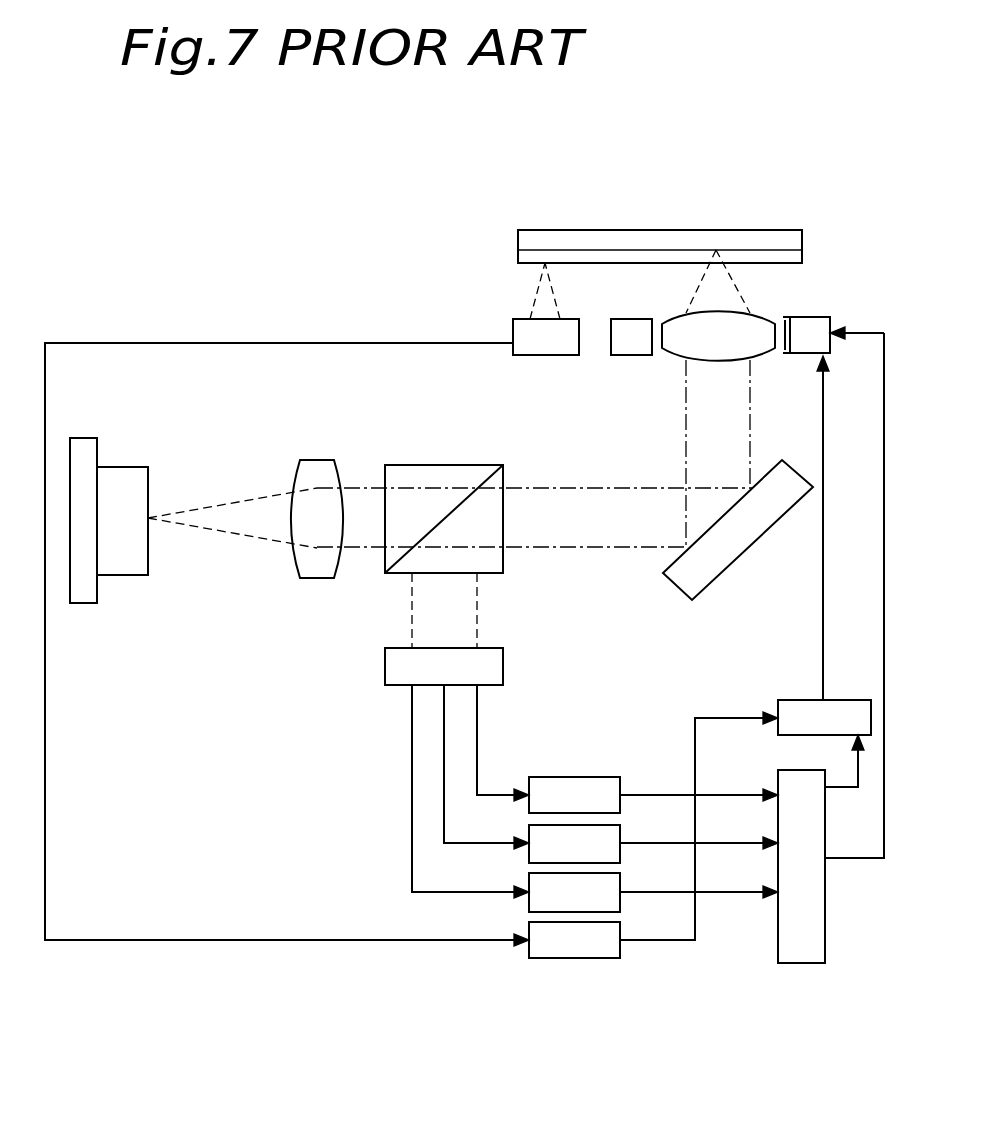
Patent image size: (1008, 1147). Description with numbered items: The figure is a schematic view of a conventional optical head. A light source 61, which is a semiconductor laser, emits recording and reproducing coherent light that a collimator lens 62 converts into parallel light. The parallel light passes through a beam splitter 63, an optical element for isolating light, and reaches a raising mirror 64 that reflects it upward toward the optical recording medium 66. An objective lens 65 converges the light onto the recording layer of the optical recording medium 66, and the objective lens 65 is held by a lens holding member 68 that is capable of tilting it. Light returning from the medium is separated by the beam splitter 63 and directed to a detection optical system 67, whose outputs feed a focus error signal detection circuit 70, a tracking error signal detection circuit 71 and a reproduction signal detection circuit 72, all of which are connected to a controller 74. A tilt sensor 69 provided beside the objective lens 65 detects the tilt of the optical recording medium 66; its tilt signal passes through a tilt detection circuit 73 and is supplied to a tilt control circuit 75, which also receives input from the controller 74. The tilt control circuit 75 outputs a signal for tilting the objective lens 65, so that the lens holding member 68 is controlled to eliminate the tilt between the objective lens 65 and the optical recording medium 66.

The light source 61 is at (90, 603).
The collimator lens 62 is at (316, 578).
The beam splitter 63 is at (415, 465).
The raising mirror 64 is at (747, 538).
The objective lens 65 is at (673, 355).
The optical recording medium 66 is at (701, 224).
The detection optical system 67 is at (503, 665).
The lens holding member 68 is at (802, 325).
The tilt sensor 69 is at (537, 355).
The focus error signal detection circuit 70 is at (623, 780).
The tracking error signal detection circuit 71 is at (623, 830).
The reproduction signal detection circuit 72 is at (623, 880).
The tilt detection circuit 73 is at (623, 926).
The controller 74 is at (828, 933).
The tilt control circuit 75 is at (787, 698).